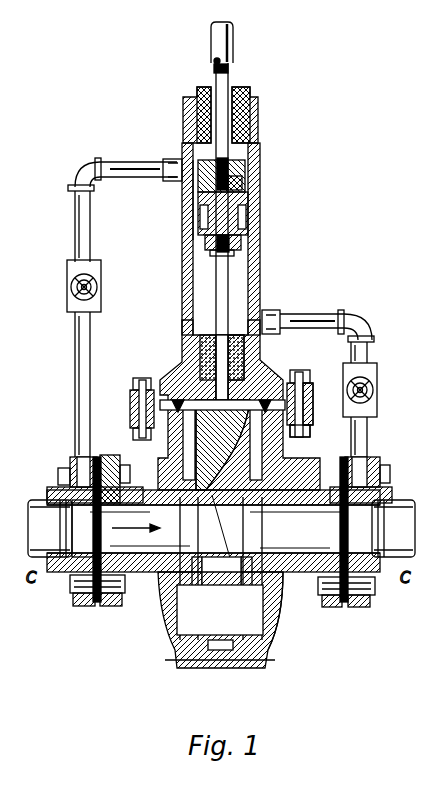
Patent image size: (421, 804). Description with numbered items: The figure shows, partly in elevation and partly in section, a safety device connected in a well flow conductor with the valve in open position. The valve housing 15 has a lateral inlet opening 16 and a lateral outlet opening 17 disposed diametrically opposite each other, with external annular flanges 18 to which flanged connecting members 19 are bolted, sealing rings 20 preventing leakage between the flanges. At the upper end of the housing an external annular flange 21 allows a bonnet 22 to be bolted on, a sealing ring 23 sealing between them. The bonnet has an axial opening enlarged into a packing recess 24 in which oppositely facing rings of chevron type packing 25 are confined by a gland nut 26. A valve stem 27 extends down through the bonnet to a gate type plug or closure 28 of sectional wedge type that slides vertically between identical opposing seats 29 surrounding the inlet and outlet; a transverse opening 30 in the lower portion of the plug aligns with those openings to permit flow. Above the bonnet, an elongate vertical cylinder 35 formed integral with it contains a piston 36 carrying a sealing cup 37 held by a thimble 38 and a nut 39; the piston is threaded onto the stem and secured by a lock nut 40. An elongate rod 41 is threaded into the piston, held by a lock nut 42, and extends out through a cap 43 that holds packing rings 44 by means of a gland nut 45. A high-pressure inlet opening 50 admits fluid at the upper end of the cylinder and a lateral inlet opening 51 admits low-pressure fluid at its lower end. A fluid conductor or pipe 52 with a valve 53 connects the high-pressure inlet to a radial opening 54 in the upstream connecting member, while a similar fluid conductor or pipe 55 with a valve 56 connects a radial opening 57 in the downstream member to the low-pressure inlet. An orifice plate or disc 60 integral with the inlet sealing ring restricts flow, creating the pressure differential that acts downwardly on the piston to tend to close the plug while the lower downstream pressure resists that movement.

The elongate rod 41 is at (232, 44).
The gland nut 45 is at (232, 82).
The cap 43 is at (258, 108).
The packing rings 44 is at (250, 130).
The lock nut 42 is at (245, 165).
The nut 39 is at (242, 186).
The piston 36 is at (248, 205).
The sealing cup 37 is at (246, 222).
The cylinder 35 is at (250, 243).
The thimble 38 is at (198, 212).
The lock nut 40 is at (210, 255).
The valve stem 27 is at (222, 293).
The packing recess 24 is at (200, 345).
The chevron type packing 25 is at (245, 350).
The gland nut 26 is at (170, 385).
The bonnet 22 is at (270, 380).
The sealing ring 23 is at (308, 385).
The external annular flange 21 is at (313, 420).
The gate type plug or closure 28 is at (262, 450).
The seats 29 is at (183, 541).
The transverse opening 30 is at (220, 562).
The valve housing 15 is at (178, 605).
The lateral inlet opening 16 is at (98, 606).
The lateral outlet opening 17 is at (283, 605).
The external annular flanges 18 is at (112, 606).
The flanged connecting members 19 is at (82, 606).
The sealing rings 20 is at (75, 600).
The orifice plate or disc 60 is at (90, 540).
The fluid conductor or pipe 52 is at (113, 162).
The high-pressure inlet opening 50 is at (170, 158).
The valve 53 is at (67, 290).
The radial opening 54 is at (70, 470).
The lateral inlet opening 51 is at (280, 312).
The fluid conductor or pipe 55 is at (320, 314).
The valve 56 is at (377, 395).
The radial opening 57 is at (368, 465).